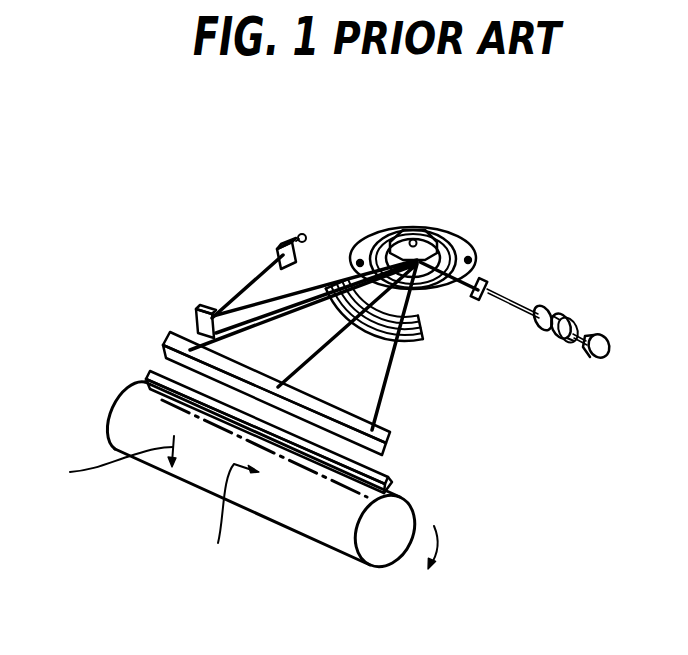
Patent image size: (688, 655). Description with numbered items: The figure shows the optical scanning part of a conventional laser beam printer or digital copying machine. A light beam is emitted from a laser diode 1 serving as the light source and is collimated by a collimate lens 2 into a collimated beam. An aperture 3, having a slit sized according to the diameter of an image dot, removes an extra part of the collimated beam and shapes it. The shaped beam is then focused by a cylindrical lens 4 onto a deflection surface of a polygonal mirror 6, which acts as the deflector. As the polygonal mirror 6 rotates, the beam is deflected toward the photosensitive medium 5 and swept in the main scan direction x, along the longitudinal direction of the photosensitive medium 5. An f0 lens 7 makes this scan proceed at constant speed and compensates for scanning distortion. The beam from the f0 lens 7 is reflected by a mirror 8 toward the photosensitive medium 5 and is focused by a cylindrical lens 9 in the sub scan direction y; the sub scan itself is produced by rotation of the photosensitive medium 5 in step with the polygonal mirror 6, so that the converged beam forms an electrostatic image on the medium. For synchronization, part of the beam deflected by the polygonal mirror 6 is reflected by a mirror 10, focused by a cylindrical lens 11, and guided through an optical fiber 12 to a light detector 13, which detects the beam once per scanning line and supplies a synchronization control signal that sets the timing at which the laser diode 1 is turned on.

The laser diode 1 is at (607, 332).
The collimate lens 2 is at (567, 317).
The aperture 3 is at (548, 307).
The cylindrical lens (#1) 4 is at (483, 300).
The photosensitive medium 5 is at (356, 560).
The polygonal mirror 6 is at (430, 228).
The f0 lens 7 is at (328, 292).
The mirror (#2) 8 is at (392, 440).
The cylindrical lens (#2) 9 is at (393, 483).
The mirror (#3) 10 is at (195, 314).
The cylindrical lens (#3) 11 is at (272, 247).
The optical fiber 12 is at (283, 238).
The light detector 13 is at (300, 233).